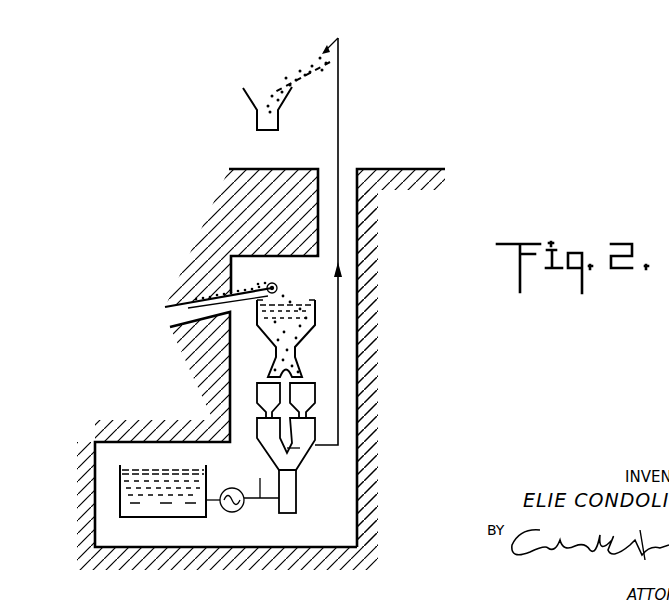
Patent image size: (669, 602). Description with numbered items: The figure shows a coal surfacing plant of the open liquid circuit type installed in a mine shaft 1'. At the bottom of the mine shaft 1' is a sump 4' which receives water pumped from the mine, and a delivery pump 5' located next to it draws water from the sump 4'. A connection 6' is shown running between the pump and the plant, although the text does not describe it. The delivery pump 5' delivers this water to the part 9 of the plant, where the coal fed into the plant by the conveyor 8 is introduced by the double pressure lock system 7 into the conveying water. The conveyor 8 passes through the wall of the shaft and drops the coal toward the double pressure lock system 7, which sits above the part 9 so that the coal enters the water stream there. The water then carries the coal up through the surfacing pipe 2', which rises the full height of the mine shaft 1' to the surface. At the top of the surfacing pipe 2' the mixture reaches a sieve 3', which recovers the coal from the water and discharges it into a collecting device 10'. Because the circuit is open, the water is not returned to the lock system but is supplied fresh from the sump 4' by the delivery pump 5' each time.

The mine shaft 1' is at (396, 358).
The surfacing pipe 2' is at (365, 241).
The sieve 3' is at (285, 81).
The sump 4' is at (157, 451).
The delivery pump 5' is at (206, 449).
The conductor wire 6' is at (261, 479).
The double pressure lock system 7 is at (315, 428).
The conveyor 8 is at (213, 293).
The part of the plant 9 is at (297, 492).
The collecting device 10' is at (248, 108).